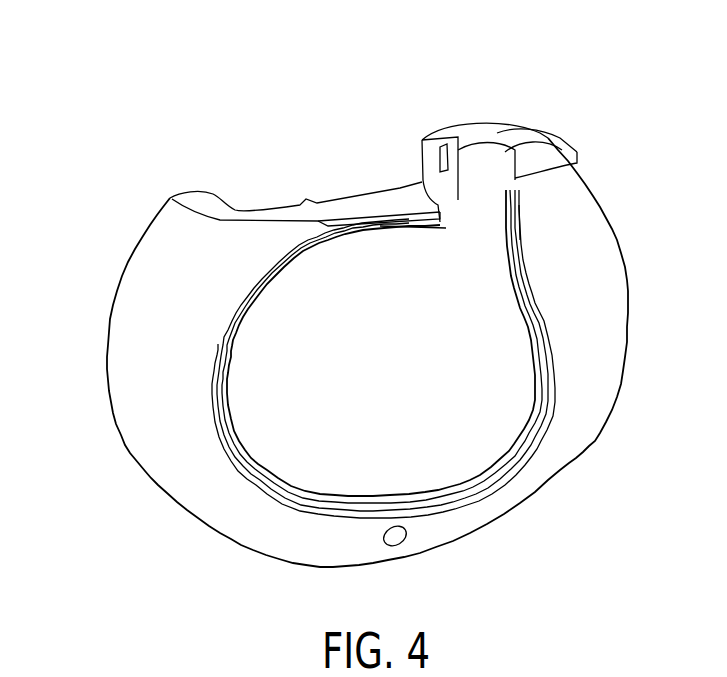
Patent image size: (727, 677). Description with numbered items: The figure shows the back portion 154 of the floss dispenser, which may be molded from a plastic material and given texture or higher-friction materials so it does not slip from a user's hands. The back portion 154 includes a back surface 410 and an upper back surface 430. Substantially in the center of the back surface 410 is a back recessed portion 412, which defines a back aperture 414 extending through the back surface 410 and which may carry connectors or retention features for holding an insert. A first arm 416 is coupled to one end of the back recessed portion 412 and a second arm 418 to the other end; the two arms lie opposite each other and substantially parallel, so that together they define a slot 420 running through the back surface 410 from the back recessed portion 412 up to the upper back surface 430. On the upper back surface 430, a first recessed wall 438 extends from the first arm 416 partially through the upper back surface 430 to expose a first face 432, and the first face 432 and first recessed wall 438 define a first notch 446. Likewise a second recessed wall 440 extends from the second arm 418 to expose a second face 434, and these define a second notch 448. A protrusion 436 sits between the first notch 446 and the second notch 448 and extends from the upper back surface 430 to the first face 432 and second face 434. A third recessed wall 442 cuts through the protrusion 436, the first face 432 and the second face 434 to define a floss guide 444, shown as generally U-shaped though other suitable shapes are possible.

The back portion 154 is at (228, 103).
The back surface 410 is at (130, 378).
The back recessed portion 412 is at (453, 472).
The back aperture 414 is at (492, 372).
The first arm 416 is at (513, 220).
The second arm 418 is at (446, 228).
The slot 420 is at (510, 205).
The upper back surface 430 is at (300, 200).
The first face 432 is at (505, 185).
The second face 434 is at (460, 175).
The protrusion 436 is at (470, 175).
The first recessed wall 438 is at (560, 134).
The second recessed wall 440 is at (450, 170).
The third recessed wall 442 is at (474, 176).
The floss guide 444 is at (481, 177).
The first notch 446 is at (497, 185).
The second notch 448 is at (457, 182).